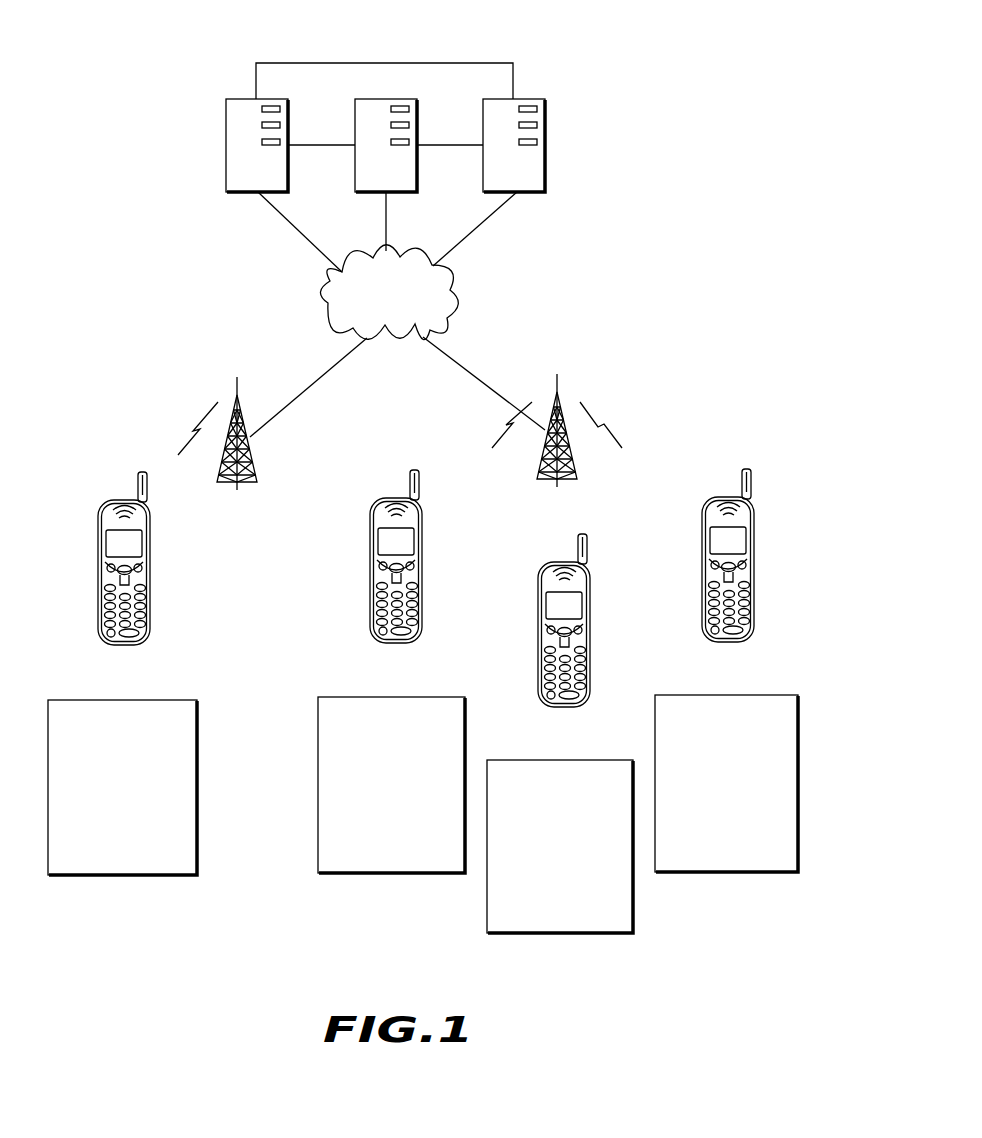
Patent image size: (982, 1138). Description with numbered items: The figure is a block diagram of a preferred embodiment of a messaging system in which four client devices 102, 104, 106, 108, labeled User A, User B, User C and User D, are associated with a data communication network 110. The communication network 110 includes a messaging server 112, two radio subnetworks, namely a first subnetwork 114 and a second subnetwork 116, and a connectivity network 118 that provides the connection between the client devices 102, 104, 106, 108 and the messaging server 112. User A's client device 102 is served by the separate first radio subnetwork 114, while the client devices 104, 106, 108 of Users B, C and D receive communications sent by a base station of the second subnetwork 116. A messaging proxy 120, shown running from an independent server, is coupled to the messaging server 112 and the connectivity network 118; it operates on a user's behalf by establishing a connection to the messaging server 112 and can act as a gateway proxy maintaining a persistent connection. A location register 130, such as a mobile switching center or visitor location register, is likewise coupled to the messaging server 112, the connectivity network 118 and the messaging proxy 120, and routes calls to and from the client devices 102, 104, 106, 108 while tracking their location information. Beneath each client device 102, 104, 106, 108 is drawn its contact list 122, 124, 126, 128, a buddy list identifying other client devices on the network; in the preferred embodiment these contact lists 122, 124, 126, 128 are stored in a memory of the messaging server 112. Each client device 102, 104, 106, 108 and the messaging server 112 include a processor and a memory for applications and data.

The client device 102 is at (98, 595).
The client device 104 is at (369, 595).
The client device 106 is at (537, 647).
The client device 108 is at (702, 596).
The data communication network 110 is at (573, 62).
The messaging server 112 is at (355, 115).
The subnetwork #1 114 is at (258, 470).
The subnetwork #2 116 is at (537, 468).
The connectivity network 118 is at (324, 281).
The messaging proxy 120 is at (226, 115).
The contact list 122 is at (122, 876).
The contact list 124 is at (392, 874).
The contact list 126 is at (560, 934).
The contact list 128 is at (726, 873).
The location register 130 is at (483, 115).